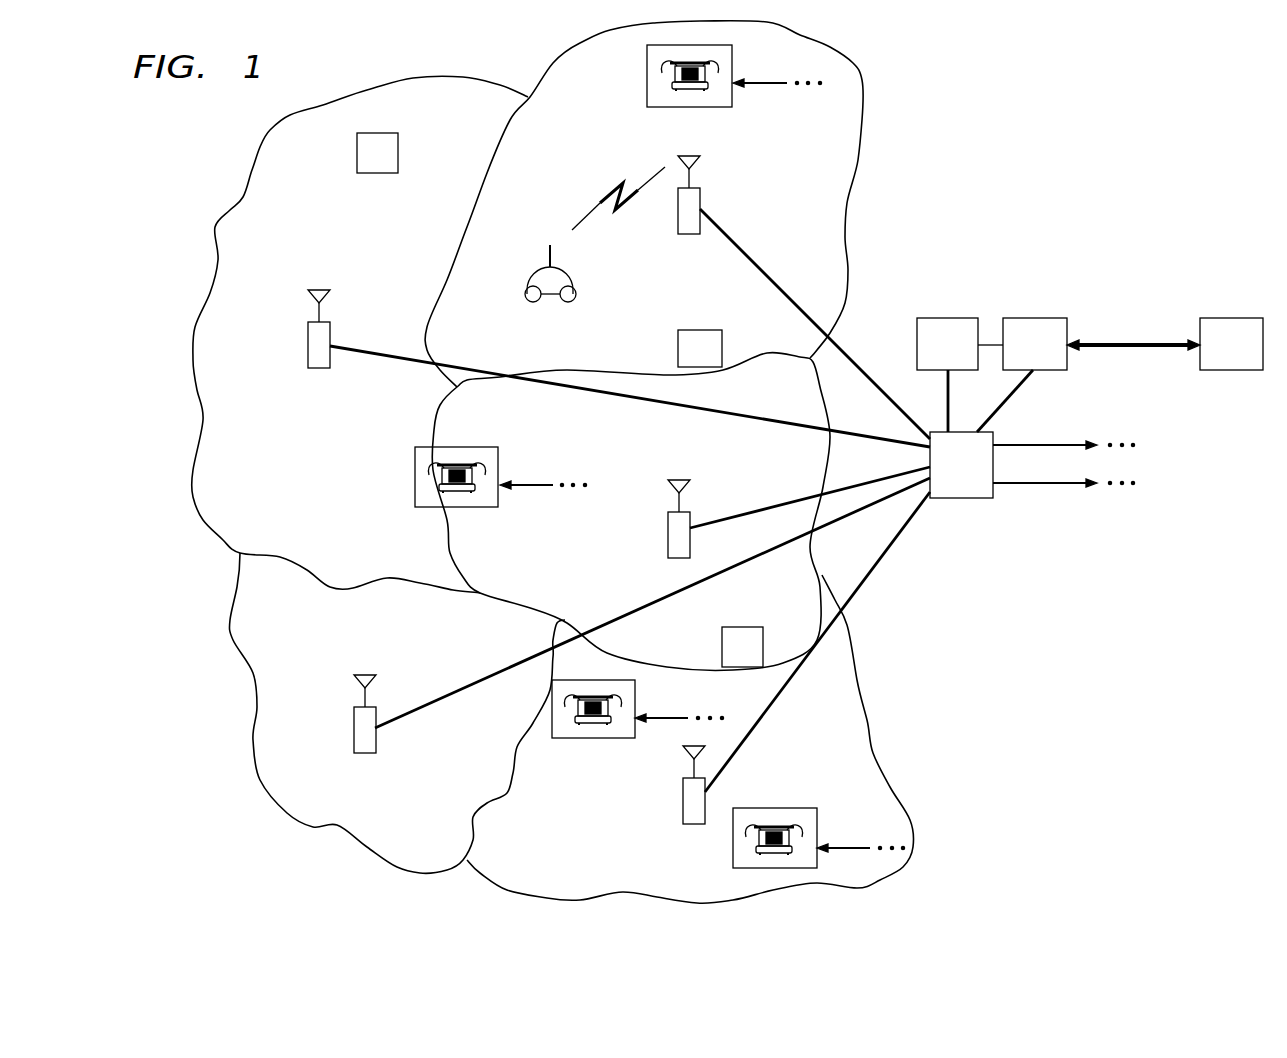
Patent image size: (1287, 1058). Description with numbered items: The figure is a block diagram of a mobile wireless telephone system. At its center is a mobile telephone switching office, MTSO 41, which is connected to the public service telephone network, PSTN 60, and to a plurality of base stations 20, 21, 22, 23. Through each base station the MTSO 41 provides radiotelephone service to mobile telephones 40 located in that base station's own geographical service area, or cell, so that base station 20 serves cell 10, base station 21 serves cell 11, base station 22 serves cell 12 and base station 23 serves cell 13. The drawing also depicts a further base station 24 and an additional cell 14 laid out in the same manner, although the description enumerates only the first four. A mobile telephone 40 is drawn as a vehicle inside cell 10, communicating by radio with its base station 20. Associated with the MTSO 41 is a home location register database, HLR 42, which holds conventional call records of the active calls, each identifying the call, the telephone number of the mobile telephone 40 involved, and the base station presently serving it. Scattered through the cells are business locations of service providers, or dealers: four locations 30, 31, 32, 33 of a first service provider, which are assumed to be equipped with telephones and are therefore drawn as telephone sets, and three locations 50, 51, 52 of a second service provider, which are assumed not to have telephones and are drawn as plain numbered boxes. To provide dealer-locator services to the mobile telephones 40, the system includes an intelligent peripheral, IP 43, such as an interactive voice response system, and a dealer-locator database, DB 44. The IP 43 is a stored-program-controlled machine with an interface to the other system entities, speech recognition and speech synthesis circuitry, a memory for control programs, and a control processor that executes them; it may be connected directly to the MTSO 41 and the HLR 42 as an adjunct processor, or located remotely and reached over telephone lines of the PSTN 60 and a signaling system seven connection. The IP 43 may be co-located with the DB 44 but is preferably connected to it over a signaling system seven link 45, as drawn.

The cell 10 is at (644, 204).
The cell 11 is at (360, 334).
The cell 12 is at (397, 713).
The cell 13 is at (690, 739).
The cell 14 is at (631, 512).
The base station 20 is at (686, 236).
The base station 21 is at (308, 352).
The base station 22 is at (355, 730).
The base station 23 is at (683, 800).
The base station 24 is at (668, 530).
The service provider location 30 is at (647, 77).
The service provider location 31 is at (498, 455).
The service provider location 32 is at (578, 738).
The service provider location 33 is at (817, 812).
The mobile telephone 40 is at (534, 275).
The mobile telephone switching office (MTSO) 41 is at (960, 498).
The home location register database (HLR) 42 is at (950, 318).
The intelligent peripheral (IP) 43 is at (1035, 318).
The dealer-locator database (DB) 44 is at (1236, 318).
The SS7 link 45 is at (1130, 351).
The service provider location 50 is at (700, 348).
The service provider location 51 is at (377, 153).
The service provider location 52 is at (742, 647).
The public service telephone network (PSTN) 60 is at (1183, 491).